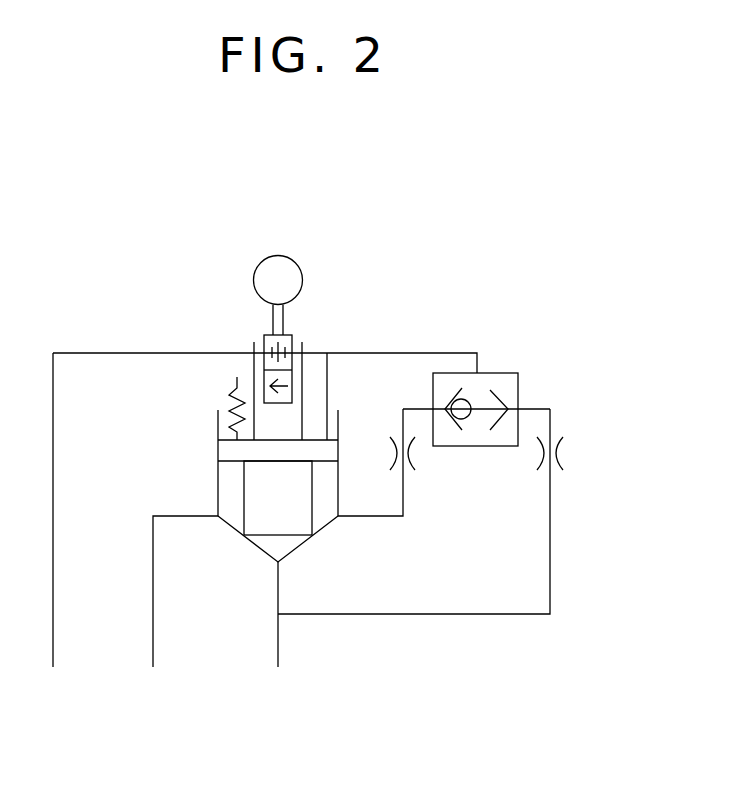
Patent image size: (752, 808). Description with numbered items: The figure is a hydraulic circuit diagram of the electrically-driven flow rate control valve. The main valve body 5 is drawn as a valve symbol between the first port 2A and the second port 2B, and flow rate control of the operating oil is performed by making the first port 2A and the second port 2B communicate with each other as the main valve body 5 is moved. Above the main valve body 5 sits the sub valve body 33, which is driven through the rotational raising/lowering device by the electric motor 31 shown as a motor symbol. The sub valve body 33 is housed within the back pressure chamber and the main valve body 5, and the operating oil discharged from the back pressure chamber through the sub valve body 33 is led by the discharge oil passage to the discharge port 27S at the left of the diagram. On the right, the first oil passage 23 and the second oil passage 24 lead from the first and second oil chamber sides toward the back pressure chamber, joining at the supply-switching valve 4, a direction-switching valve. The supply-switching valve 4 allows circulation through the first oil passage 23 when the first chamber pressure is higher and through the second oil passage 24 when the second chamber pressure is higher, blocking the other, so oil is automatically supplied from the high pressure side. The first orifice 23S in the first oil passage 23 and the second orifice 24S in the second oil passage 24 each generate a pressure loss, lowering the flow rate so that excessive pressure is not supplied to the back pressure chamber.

The first port 2A is at (280, 638).
The second port 2B is at (177, 615).
The supply-switching valve 4 is at (498, 373).
The main valve body 5 is at (243, 486).
The first oil passage 23 is at (550, 593).
The first orifice 23S is at (562, 452).
The second oil passage 24 is at (387, 516).
The second orifice 24S is at (417, 452).
The discharge port 27S is at (54, 533).
The electric motor 31 is at (295, 259).
The sub valve body 33 is at (265, 337).